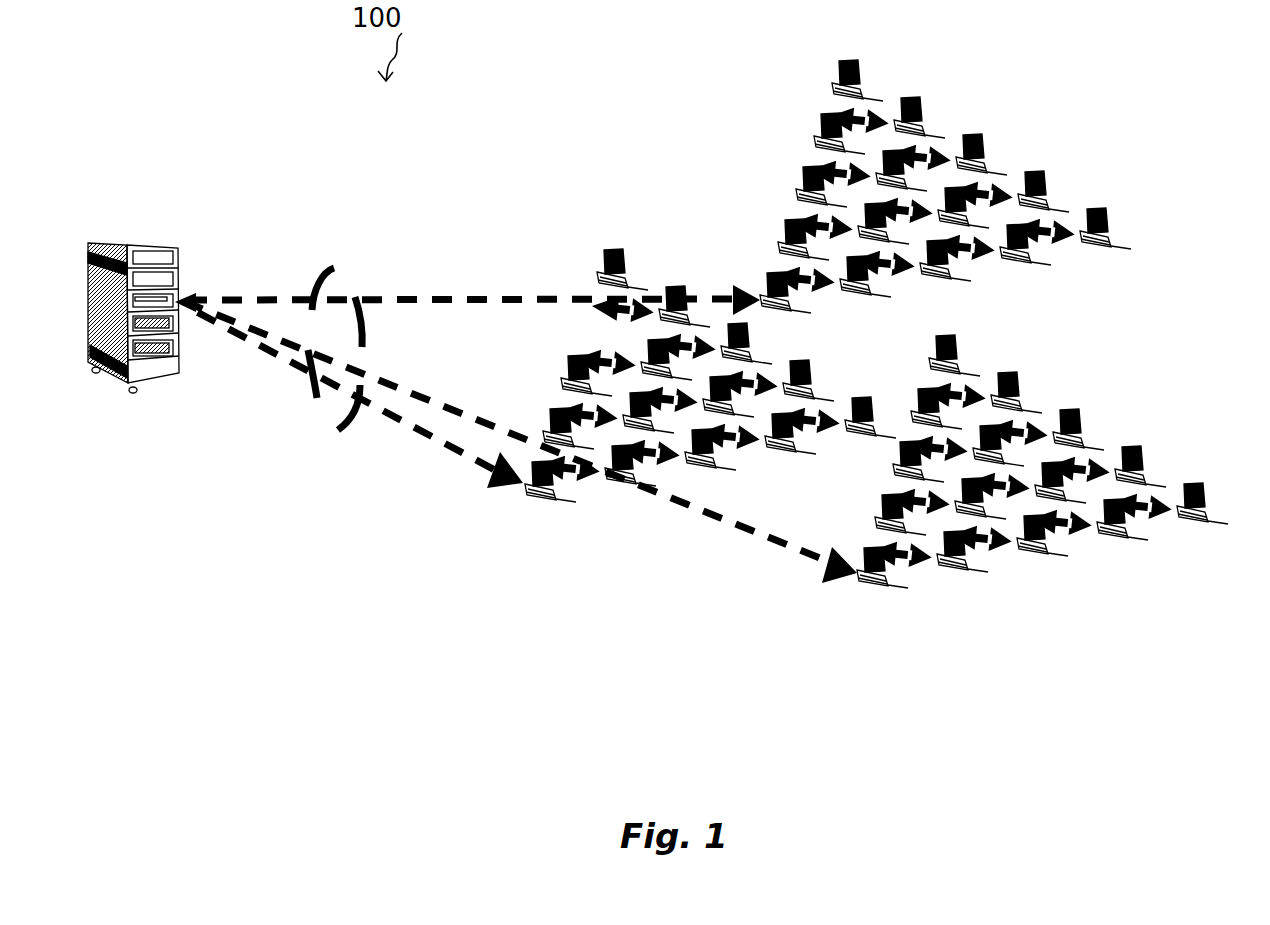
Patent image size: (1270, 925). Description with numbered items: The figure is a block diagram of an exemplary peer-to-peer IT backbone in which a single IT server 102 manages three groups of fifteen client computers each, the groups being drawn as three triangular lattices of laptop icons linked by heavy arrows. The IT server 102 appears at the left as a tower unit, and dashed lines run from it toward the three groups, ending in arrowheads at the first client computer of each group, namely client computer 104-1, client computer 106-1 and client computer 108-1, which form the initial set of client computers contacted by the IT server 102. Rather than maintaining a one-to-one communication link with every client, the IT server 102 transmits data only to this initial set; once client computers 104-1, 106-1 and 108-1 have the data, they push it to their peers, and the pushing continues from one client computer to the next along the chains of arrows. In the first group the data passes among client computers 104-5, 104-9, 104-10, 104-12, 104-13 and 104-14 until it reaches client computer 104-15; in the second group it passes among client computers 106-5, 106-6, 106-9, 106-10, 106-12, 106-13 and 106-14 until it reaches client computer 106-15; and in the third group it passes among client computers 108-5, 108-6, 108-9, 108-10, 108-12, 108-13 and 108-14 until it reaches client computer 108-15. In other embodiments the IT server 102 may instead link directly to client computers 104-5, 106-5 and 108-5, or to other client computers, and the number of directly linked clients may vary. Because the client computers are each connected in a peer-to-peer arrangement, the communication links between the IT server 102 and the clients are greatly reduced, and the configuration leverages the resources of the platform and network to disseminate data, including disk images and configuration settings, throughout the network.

The IT server 102 is at (141, 248).
The client computer 104-1 is at (564, 500).
The client computer 104-5 is at (622, 258).
The client computer 104-9 is at (697, 290).
The client computer 104-10 is at (641, 485).
The client computer 104-12 is at (786, 344).
The client computer 104-13 is at (704, 464).
The client computer 104-14 is at (840, 368).
The client computer 104-15 is at (888, 392).
The client computer 106-1 is at (767, 283).
The client computer 106-5 is at (848, 64).
The client computer 106-6 is at (897, 296).
The client computer 106-9 is at (930, 99).
The client computer 106-10 is at (964, 278).
The client computer 106-12 is at (1000, 131).
The client computer 106-13 is at (1037, 260).
The client computer 106-14 is at (1072, 166).
The client computer 106-15 is at (1140, 201).
The client computer 108-1 is at (873, 590).
The client computer 108-5 is at (950, 340).
The client computer 108-6 is at (955, 577).
The client computer 108-9 is at (1040, 376).
The client computer 108-10 is at (1036, 555).
The client computer 108-12 is at (1107, 406).
The client computer 108-13 is at (1117, 535).
The client computer 108-14 is at (1172, 444).
The client computer 108-15 is at (1227, 478).